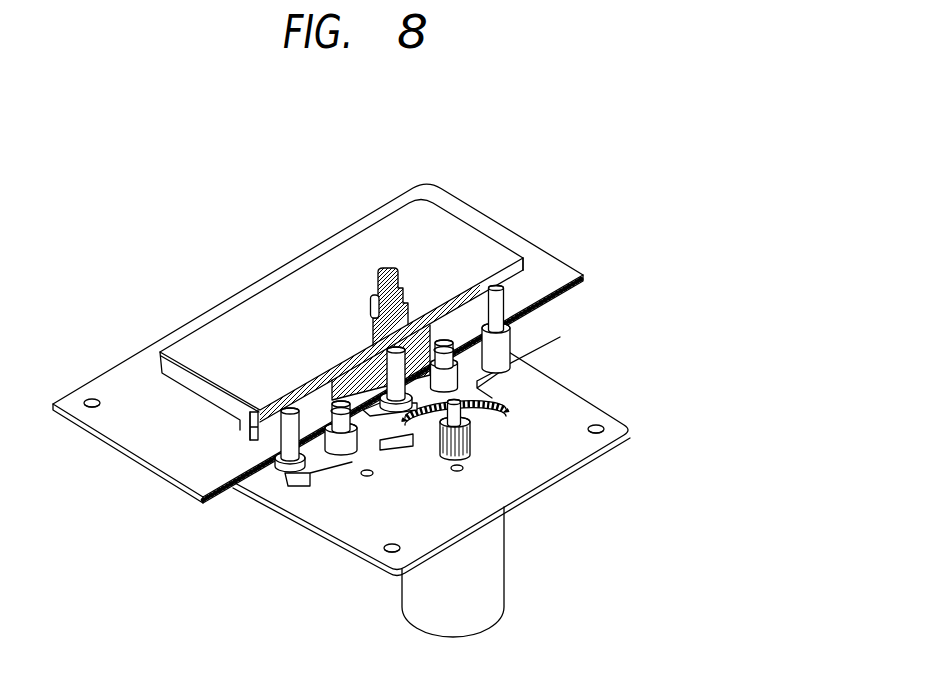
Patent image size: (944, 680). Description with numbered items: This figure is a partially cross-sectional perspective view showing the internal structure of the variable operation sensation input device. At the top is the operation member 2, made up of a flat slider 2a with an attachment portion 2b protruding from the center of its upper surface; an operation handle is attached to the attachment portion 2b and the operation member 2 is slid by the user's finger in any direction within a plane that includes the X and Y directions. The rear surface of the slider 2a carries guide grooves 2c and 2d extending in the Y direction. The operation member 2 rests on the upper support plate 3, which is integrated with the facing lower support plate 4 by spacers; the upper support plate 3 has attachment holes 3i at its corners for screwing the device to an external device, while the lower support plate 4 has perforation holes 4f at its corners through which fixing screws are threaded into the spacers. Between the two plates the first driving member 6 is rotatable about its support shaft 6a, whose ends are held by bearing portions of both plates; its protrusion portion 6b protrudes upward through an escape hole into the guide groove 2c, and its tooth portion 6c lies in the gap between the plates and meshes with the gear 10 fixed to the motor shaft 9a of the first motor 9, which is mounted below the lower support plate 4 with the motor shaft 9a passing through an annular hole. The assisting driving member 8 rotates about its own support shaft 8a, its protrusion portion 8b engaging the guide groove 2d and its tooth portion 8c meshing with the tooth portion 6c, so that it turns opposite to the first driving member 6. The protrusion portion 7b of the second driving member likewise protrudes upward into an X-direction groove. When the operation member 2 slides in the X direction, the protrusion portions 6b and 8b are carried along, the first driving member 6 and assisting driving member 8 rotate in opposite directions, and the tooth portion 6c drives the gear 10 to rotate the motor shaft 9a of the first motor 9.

The operation member 2 is at (348, 301).
The slider 2a is at (306, 283).
The attachment portion 2b is at (385, 268).
The guide groove 2c is at (530, 275).
The guide groove 2d is at (242, 432).
The upper support plate 3 is at (314, 343).
The attachment hole 3i is at (88, 390).
The lower support plate 4 is at (461, 458).
The perforation hole 4f is at (601, 425).
The first driving member 6 is at (545, 342).
The support shaft 6a is at (446, 341).
The protrusion portion 6b is at (499, 312).
The tooth portion 6c is at (488, 413).
The protrusion portion 7b is at (391, 400).
The assisting driving member 8 is at (316, 537).
The support shaft 8a is at (348, 440).
The protrusion portion 8b is at (289, 447).
The tooth portion 8c is at (427, 425).
The first motor 9 is at (507, 487).
The motor shaft 9a is at (493, 392).
The gear 10 is at (474, 432).